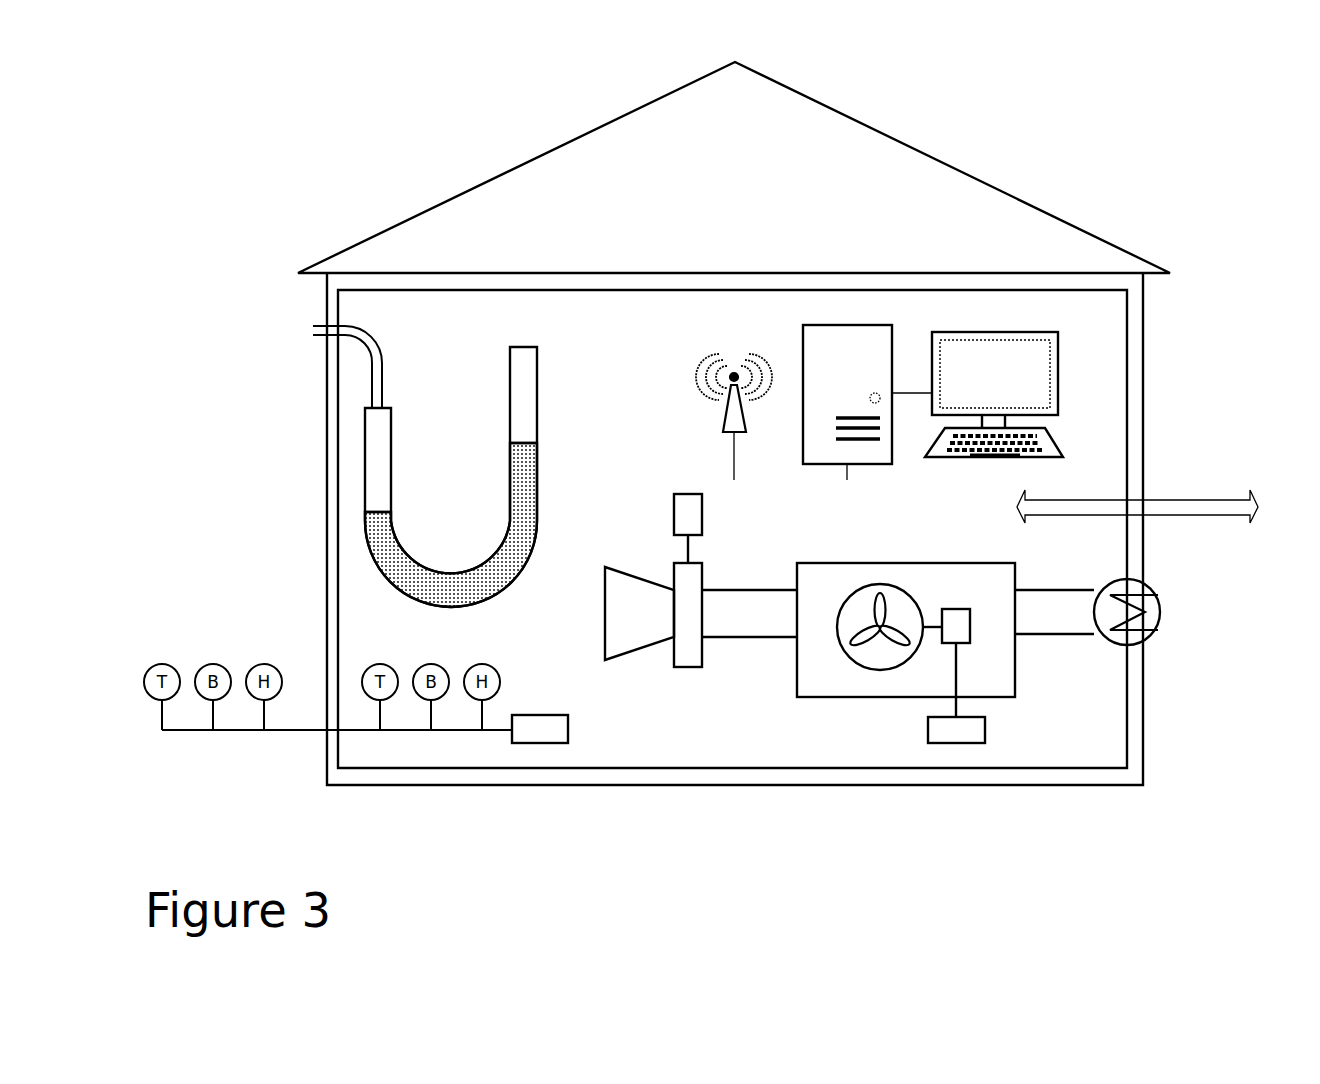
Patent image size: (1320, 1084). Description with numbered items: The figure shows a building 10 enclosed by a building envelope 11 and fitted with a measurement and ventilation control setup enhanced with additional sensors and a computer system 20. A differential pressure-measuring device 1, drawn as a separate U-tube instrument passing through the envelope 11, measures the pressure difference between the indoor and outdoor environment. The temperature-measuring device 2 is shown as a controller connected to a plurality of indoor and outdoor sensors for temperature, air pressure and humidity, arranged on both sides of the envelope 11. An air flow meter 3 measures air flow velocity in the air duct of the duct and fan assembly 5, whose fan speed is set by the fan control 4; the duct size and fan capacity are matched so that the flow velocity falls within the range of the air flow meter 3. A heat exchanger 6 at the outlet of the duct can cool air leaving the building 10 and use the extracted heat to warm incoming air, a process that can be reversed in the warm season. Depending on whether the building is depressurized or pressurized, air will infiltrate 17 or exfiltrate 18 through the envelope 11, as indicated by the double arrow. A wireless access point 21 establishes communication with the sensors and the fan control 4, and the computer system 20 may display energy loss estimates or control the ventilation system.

The differential pressure-measuring device 1 is at (425, 466).
The temperature-measuring device 2 is at (545, 718).
The air flow meter 3 is at (682, 515).
The fan control 4 is at (946, 693).
The duct and fan assembly 5 is at (945, 618).
The heat exchanger 6 is at (1127, 599).
The building 10 is at (678, 423).
The building envelope 11 is at (323, 507).
The infiltrate 17 is at (1137, 494).
The exfiltrate 18 is at (1137, 506).
The computer system 20 is at (933, 402).
The wireless access point 21 is at (731, 417).